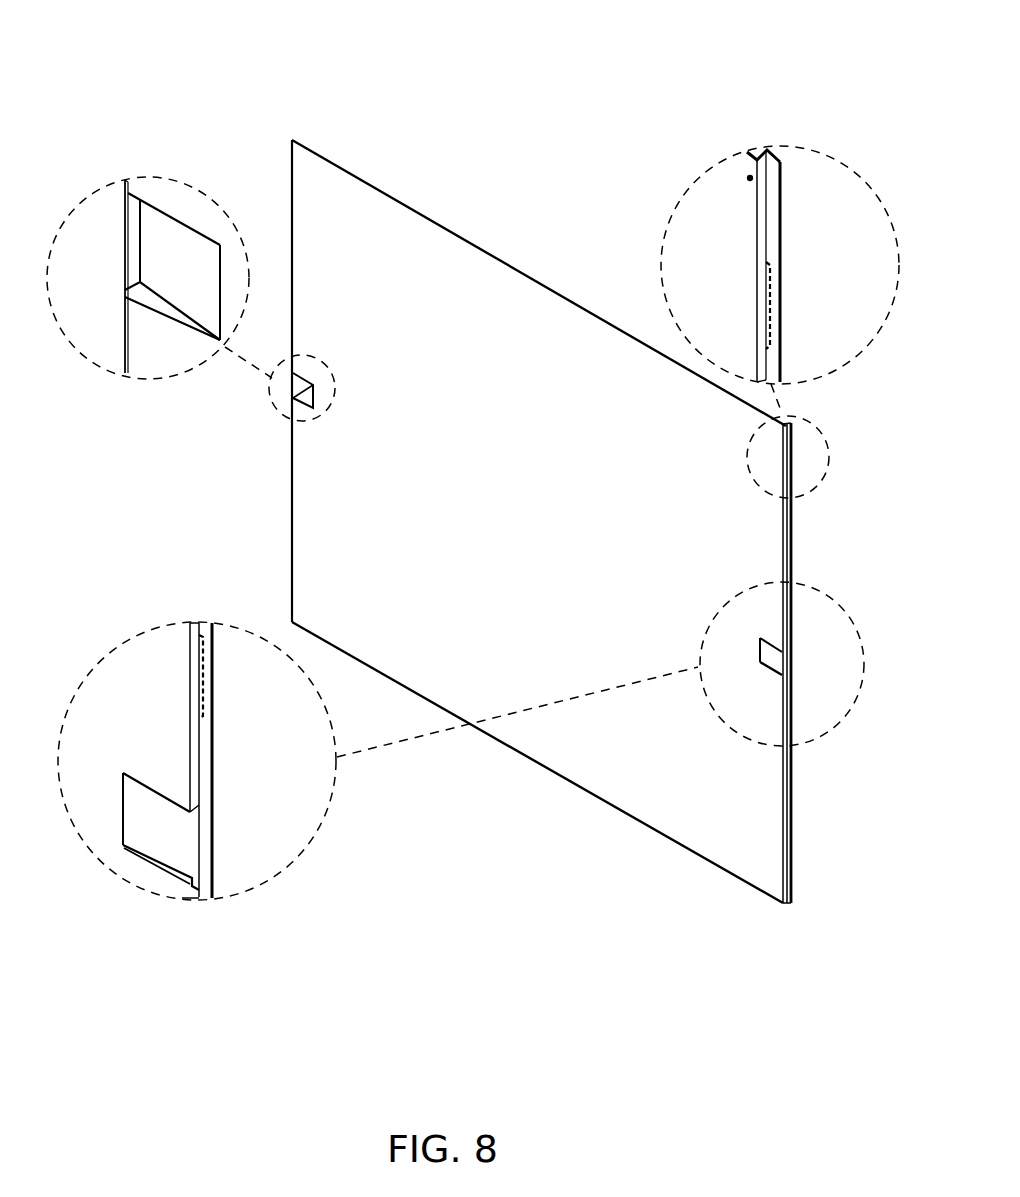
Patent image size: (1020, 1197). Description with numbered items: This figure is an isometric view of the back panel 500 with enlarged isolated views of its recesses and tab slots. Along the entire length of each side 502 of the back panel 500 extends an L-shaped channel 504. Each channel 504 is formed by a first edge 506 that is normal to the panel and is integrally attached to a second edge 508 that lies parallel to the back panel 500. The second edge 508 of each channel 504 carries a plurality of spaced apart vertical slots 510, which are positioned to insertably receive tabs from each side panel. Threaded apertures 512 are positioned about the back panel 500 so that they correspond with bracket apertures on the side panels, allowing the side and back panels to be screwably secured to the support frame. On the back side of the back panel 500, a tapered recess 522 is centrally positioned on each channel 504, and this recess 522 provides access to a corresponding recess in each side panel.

The back panel 500 is at (410, 100).
The side 502 is at (292, 173).
The L-shaped channel 504 is at (767, 149).
The first edge 506 is at (757, 365).
The second edge 508 is at (773, 247).
The vertical slots 510 is at (772, 313).
The threaded apertures 512 is at (750, 178).
The tapered recess 522 is at (157, 280).